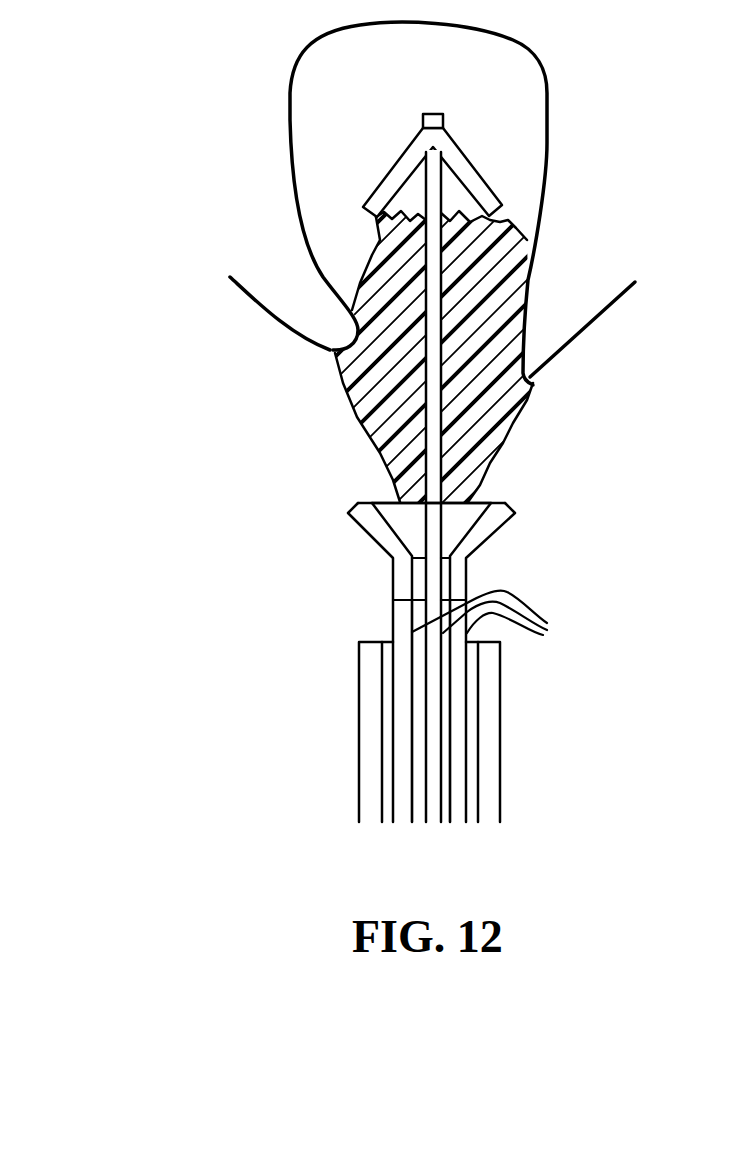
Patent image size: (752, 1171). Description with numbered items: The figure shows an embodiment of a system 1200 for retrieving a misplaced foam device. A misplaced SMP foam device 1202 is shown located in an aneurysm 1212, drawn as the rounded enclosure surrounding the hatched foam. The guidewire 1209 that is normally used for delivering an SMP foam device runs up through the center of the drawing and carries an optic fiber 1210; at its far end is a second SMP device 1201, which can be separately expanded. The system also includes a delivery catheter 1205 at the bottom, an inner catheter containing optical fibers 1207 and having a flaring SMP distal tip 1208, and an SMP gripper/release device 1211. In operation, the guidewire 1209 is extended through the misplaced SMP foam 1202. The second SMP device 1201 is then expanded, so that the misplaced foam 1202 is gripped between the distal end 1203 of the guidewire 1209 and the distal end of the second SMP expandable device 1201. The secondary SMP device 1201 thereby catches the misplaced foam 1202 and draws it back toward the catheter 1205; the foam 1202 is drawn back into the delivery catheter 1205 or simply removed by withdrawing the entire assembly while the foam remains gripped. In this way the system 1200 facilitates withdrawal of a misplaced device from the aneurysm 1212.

The system for retrieving a misplaced foam device 1200 is at (188, 874).
The second SMP device 1201 is at (445, 127).
The misplaced SMP foam device 1202 is at (517, 413).
The distal end of the guidewire 1203 is at (425, 543).
The delivery catheter 1205 is at (500, 775).
The optical fibers 1207 is at (514, 619).
The flaring SMP distal tip 1208 is at (368, 537).
The guidewire 1209 is at (424, 535).
The optic fiber 1210 is at (443, 195).
The SMP gripper/release device 1211 is at (368, 198).
The aneurysm 1212 is at (288, 134).